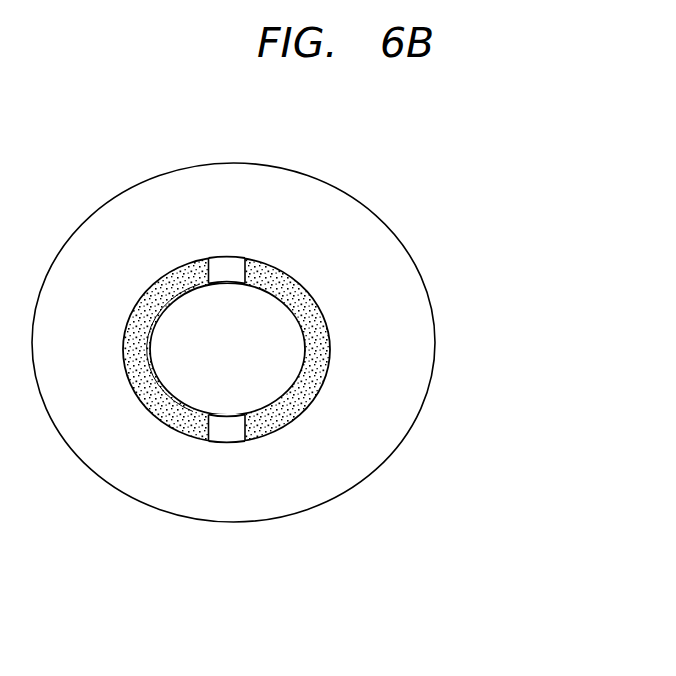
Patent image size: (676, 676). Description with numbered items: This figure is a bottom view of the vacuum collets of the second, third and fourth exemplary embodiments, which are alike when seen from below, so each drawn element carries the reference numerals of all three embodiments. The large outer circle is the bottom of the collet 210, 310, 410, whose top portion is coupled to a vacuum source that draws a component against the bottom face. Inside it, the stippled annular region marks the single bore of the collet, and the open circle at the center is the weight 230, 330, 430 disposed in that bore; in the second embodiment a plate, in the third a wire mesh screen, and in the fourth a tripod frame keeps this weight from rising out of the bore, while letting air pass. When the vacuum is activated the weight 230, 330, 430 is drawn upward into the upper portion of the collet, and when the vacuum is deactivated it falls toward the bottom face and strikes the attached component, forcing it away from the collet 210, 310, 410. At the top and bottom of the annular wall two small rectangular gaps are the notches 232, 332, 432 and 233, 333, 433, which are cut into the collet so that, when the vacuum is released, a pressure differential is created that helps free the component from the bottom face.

The vacuum collet 210 is at (329, 342).
The vacuum collet 310 is at (329, 342).
The vacuum collet 410 is at (437, 323).
The weight 230 is at (389, 349).
The weight 330 is at (389, 349).
The weight 430 is at (253, 358).
The notch 232 is at (387, 229).
The notch 332 is at (387, 229).
The notch 432 is at (231, 250).
The notch 233 is at (212, 511).
The notch 333 is at (212, 511).
The notch 433 is at (228, 450).